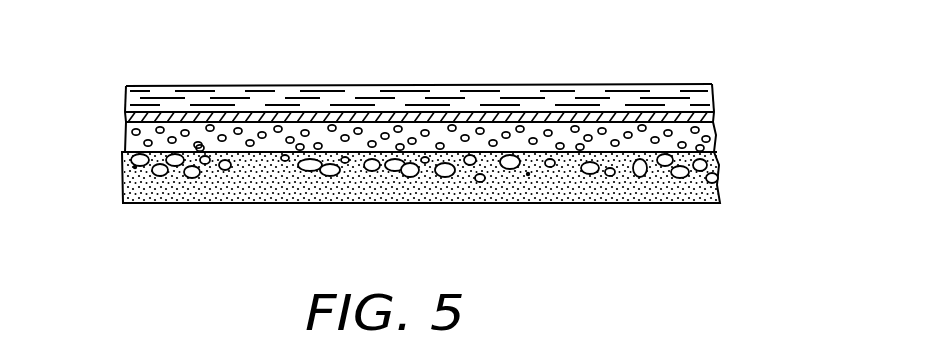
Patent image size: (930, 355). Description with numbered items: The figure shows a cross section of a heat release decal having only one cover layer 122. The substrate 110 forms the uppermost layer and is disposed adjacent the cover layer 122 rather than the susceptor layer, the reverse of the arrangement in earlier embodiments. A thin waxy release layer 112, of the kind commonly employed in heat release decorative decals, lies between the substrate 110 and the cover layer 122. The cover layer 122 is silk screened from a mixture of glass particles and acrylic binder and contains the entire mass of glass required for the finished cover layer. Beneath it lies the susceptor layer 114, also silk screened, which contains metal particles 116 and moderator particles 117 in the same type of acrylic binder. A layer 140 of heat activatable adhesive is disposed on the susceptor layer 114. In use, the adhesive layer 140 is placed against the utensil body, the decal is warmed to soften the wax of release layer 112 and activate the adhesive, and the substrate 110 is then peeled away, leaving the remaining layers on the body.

The substrate 110 is at (258, 93).
The release layer 112 is at (163, 112).
The cover layer 122 is at (720, 132).
The susceptor layer 114 is at (724, 162).
The metal particles 116 is at (190, 172).
The moderator particles 117 is at (135, 168).
The adhesive layer 140 is at (627, 177).